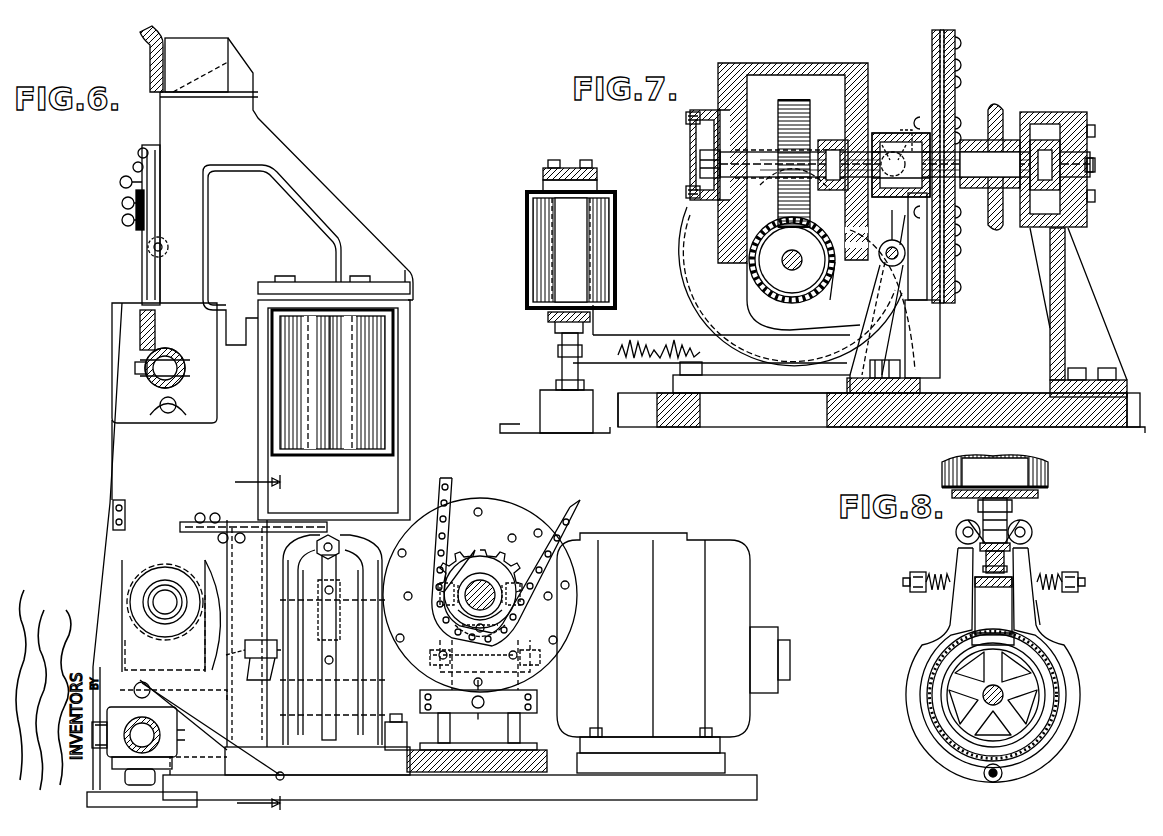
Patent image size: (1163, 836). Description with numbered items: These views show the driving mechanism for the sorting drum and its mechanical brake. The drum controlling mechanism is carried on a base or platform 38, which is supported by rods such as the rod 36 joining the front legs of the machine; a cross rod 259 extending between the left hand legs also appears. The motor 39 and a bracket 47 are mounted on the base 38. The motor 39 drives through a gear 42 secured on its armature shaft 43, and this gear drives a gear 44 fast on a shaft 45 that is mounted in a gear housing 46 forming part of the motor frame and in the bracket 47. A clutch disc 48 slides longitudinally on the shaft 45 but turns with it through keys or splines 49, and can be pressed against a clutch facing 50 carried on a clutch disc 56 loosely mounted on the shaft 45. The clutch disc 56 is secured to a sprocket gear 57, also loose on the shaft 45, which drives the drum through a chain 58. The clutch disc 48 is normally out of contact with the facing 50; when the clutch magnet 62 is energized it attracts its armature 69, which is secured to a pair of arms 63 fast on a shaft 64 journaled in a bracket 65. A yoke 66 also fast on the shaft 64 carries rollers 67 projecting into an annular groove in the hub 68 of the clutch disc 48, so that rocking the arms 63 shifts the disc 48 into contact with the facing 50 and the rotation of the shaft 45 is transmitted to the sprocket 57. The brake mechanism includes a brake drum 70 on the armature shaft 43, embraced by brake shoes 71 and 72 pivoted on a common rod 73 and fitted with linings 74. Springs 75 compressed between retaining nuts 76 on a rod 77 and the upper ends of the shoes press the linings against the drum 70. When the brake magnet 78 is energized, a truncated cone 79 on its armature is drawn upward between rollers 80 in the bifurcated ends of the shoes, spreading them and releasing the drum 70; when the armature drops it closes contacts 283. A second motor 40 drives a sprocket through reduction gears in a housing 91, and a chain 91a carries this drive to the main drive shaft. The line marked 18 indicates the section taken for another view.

In FIG. 6, the section line indicator 18 is at (271, 642).
In FIG. 6, the rod 36 is at (160, 720).
In FIG. 6, the base 38 is at (745, 795).
In FIG. 7, the base 38 is at (880, 410).
In FIG. 6, the motor 39 is at (673, 653).
In FIG. 7, the motor 39 is at (695, 280).
In FIG. 6, the motor 40 is at (247, 633).
In FIG. 7, the gear 42 is at (760, 278).
In FIG. 6, the armature shaft 43 is at (243, 660).
In FIG. 7, the armature shaft 43 is at (792, 268).
In FIG. 8, the armature shaft 43 is at (1000, 694).
In FIG. 7, the gear 44 is at (795, 108).
In FIG. 6, the shaft 45 is at (477, 588).
In FIG. 7, the shaft 45 is at (1000, 180).
In FIG. 7, the gear housing 46 is at (780, 65).
In FIG. 7, the bracket 47 is at (1060, 255).
In FIG. 7, the clutch disc 48 is at (932, 52).
In FIG. 7, the keys or splines 49 is at (887, 150).
In FIG. 7, the clutch facing 50 is at (960, 57).
In FIG. 6, the clutch disc 56 is at (513, 515).
In FIG. 7, the clutch disc 56 is at (958, 72).
In FIG. 6, the sprocket gear 57 is at (487, 556).
In FIG. 7, the sprocket gear 57 is at (1003, 113).
In FIG. 6, the chain 58 is at (578, 508).
In FIG. 7, the clutch magnet 62 is at (535, 238).
In FIG. 6, the arms 63 is at (520, 729).
In FIG. 7, the arms 63 is at (655, 342).
In FIG. 6, the shaft 64 is at (545, 665).
In FIG. 7, the shaft 64 is at (862, 300).
In FIG. 6, the bracket 65 is at (505, 727).
In FIG. 7, the bracket 65 is at (942, 357).
In FIG. 6, the yoke 66 is at (500, 628).
In FIG. 7, the yoke 66 is at (905, 215).
In FIG. 6, the rollers 67 is at (521, 580).
In FIG. 7, the rollers 67 is at (914, 128).
In FIG. 7, the hub 68 is at (876, 133).
In FIG. 7, the armature 69 is at (548, 316).
In FIG. 8, the brake drum 70 is at (995, 642).
In FIG. 8, the brake shoe 71 is at (950, 617).
In FIG. 8, the brake shoe 72 is at (1058, 650).
In FIG. 8, the rod 73 is at (1003, 778).
In FIG. 8, the linings 74 is at (1055, 672).
In FIG. 8, the springs 75 is at (1055, 576).
In FIG. 8, the retaining nuts 76 is at (1076, 580).
In FIG. 8, the rod 77 is at (997, 588).
In FIG. 6, the brake magnet 78 is at (372, 361).
In FIG. 8, the brake magnet 78 is at (1050, 467).
In FIG. 8, the truncated cone 79 is at (1005, 528).
In FIG. 8, the rollers 80 is at (1033, 531).
In FIG. 6, the housing 91 is at (167, 566).
In FIG. 6, the chain 91a is at (126, 528).
In FIG. 6, the cross rod 259 is at (147, 368).
In FIG. 6, the contacts 283 is at (342, 548).
In FIG. 8, the contacts 283 is at (984, 565).